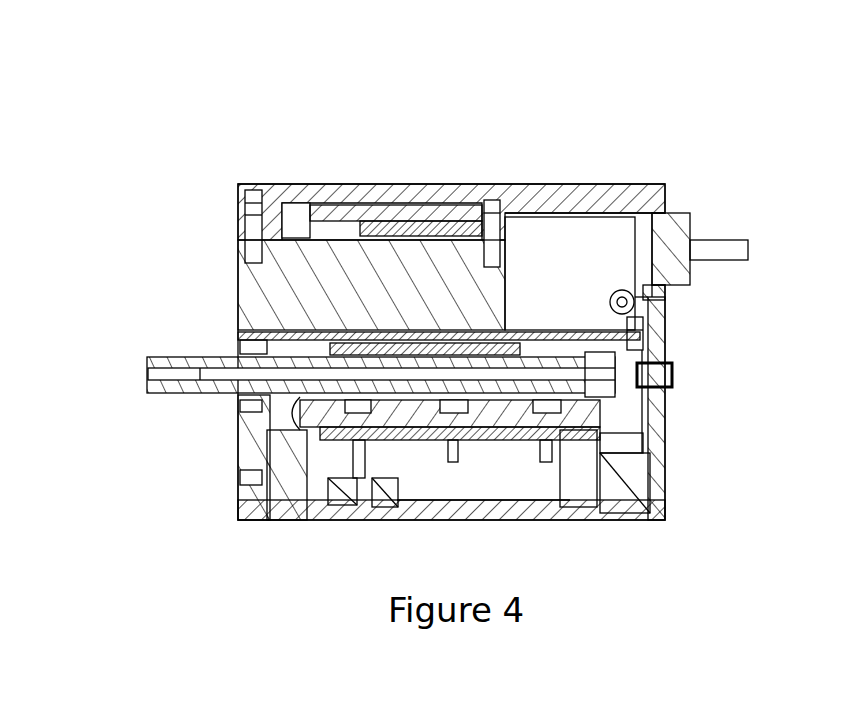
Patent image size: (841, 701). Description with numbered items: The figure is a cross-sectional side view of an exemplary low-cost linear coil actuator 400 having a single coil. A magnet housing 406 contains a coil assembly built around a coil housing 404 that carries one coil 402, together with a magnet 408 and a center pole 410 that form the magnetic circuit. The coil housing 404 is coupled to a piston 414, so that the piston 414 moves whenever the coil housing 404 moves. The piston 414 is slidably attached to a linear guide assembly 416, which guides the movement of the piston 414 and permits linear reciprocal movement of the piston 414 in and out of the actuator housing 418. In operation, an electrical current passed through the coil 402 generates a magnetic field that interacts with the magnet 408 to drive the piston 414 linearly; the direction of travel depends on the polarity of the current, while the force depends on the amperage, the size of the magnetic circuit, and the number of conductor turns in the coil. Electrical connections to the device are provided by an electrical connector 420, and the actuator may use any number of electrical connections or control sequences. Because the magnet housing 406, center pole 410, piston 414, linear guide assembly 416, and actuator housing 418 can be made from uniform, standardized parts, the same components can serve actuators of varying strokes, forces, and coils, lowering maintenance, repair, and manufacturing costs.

The actuator 400 is at (100, 77).
The coil 402 is at (458, 222).
The coil housing 404 is at (335, 347).
The magnet housing 406 is at (236, 183).
The magnet 408 is at (385, 208).
The center pole 410 is at (265, 288).
The piston 414 is at (212, 396).
The linear guide assembly 416 is at (523, 398).
The actuator housing 418 is at (236, 518).
The electrical connector 420 is at (728, 238).